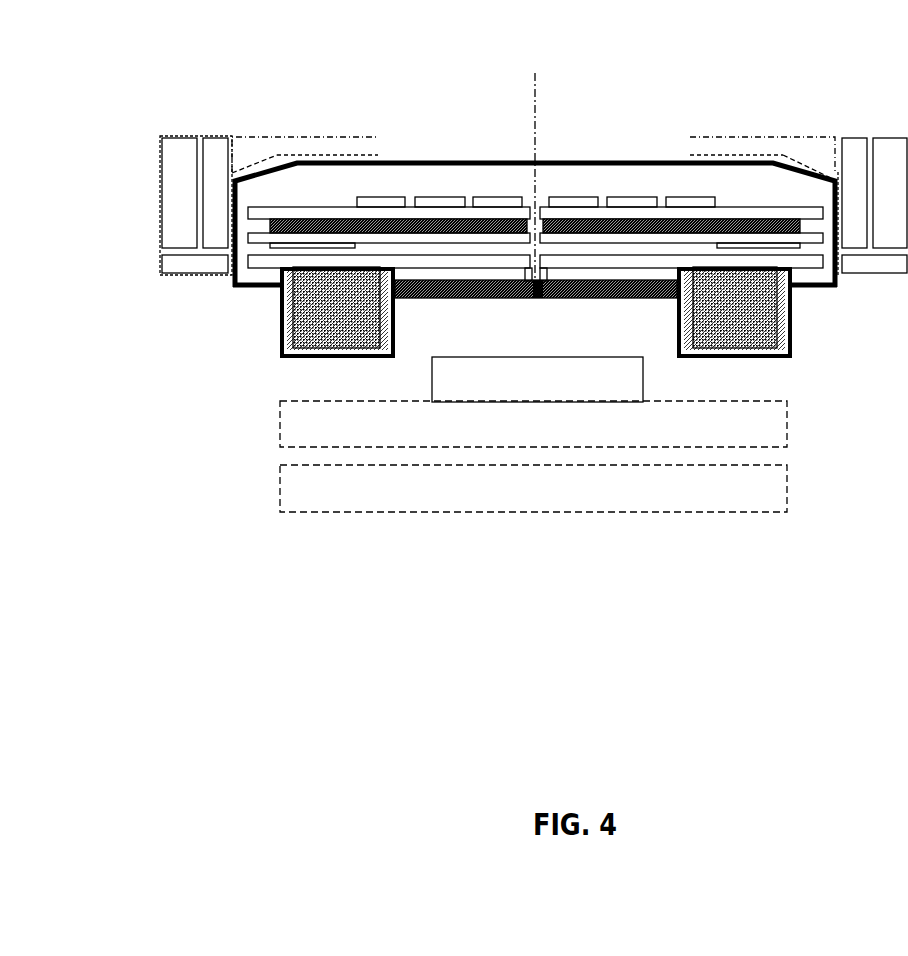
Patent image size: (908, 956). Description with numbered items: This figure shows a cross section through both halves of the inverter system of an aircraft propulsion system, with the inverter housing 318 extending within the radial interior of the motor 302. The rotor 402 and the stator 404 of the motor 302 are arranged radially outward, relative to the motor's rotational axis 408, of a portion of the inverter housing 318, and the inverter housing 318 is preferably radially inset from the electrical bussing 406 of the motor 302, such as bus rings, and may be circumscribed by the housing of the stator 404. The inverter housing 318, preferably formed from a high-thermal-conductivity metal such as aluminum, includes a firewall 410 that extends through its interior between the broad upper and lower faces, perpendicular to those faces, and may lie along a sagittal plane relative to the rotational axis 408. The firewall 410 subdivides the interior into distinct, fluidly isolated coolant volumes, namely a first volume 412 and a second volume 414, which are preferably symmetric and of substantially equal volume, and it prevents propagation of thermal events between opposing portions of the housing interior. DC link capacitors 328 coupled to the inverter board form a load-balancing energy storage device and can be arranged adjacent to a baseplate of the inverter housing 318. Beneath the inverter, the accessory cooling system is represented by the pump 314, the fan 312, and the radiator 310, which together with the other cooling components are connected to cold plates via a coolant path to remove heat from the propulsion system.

The motor 302 is at (305, 137).
The radiator 310 is at (608, 501).
The fan 312 is at (568, 436).
The pump 314 is at (578, 392).
The inverter housing 318 is at (277, 307).
The DC link capacitors 328 is at (760, 330).
The rotor 402 is at (175, 155).
The stator 404 is at (217, 138).
The electrical bussing 406 is at (175, 263).
The rotational axis 408 is at (533, 73).
The firewall 410 is at (538, 180).
The first volume 412 is at (423, 182).
The second volume 414 is at (613, 180).